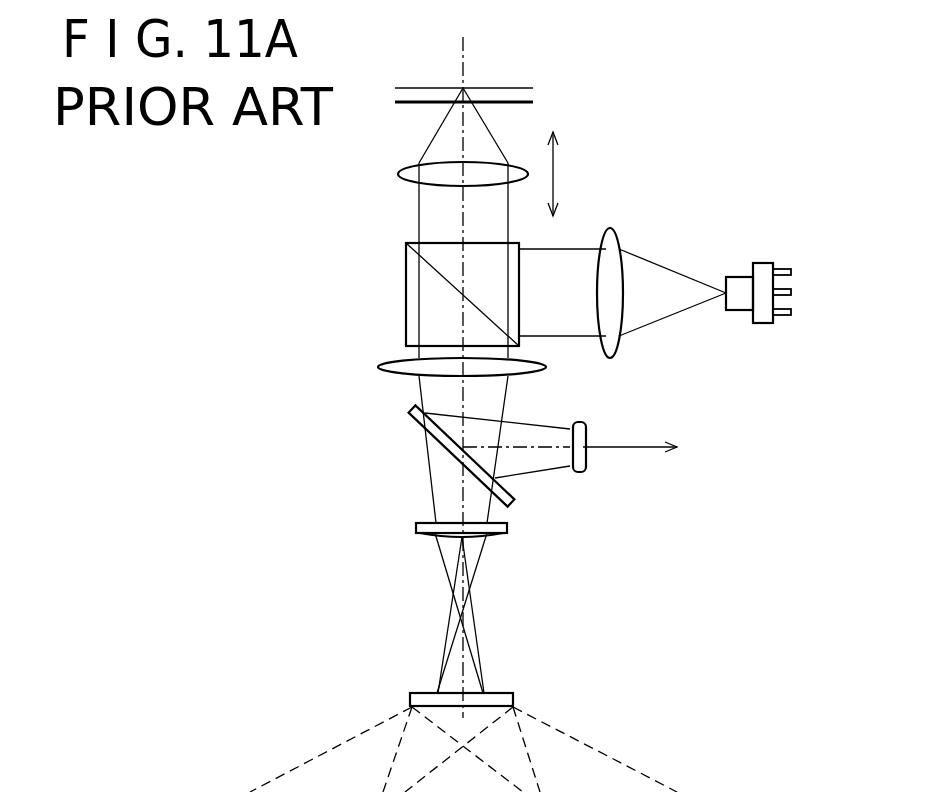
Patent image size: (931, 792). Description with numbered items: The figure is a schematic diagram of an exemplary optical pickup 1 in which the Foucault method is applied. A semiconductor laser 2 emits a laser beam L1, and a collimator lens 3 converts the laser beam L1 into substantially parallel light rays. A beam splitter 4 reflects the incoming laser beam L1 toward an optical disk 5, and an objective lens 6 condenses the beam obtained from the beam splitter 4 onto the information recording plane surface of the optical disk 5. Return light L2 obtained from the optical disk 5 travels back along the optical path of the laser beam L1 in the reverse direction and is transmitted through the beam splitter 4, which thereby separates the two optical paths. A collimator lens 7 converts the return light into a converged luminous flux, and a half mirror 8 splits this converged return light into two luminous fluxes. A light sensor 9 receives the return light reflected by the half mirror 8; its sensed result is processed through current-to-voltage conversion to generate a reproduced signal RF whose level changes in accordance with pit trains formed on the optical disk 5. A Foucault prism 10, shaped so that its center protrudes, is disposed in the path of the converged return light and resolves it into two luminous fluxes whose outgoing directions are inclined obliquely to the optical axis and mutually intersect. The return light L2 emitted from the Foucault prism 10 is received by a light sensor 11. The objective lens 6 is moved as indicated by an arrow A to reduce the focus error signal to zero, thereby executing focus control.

The optical pickup 1 is at (520, 414).
The semiconductor laser 2 is at (740, 308).
The collimator lens 3 is at (612, 230).
The beam splitter 4 is at (406, 292).
The optical disk 5 is at (520, 88).
The objective lens 6 is at (407, 177).
The collimator lens 7 is at (543, 368).
The half mirror 8 is at (410, 415).
The light sensor 9 is at (585, 470).
The Foucault prism 10 is at (415, 528).
The light sensor 11 is at (412, 693).
The laser beam L1 is at (672, 268).
The return light L2 is at (417, 393).
The arrow A is at (557, 177).
The reproduced signal RF is at (640, 443).